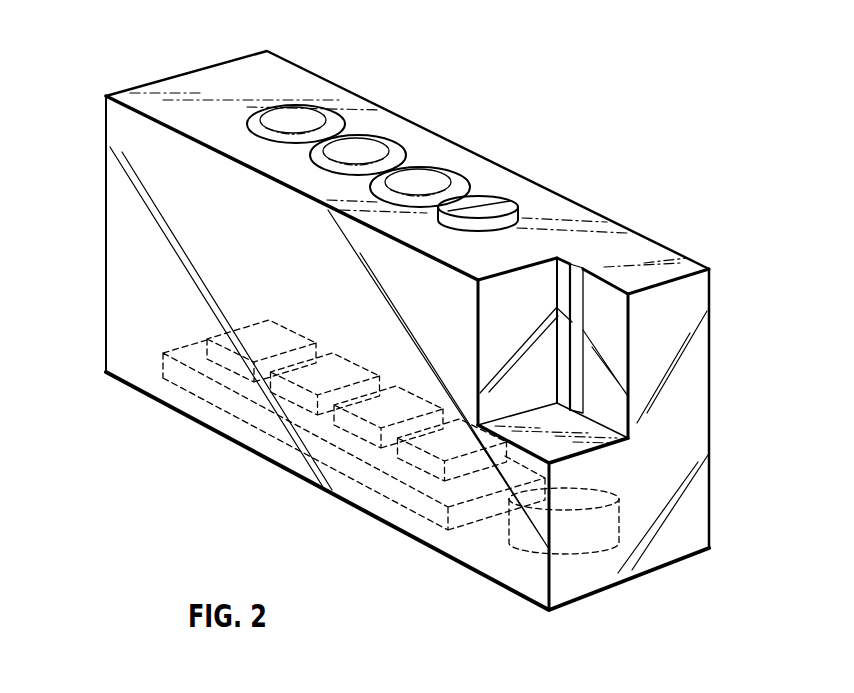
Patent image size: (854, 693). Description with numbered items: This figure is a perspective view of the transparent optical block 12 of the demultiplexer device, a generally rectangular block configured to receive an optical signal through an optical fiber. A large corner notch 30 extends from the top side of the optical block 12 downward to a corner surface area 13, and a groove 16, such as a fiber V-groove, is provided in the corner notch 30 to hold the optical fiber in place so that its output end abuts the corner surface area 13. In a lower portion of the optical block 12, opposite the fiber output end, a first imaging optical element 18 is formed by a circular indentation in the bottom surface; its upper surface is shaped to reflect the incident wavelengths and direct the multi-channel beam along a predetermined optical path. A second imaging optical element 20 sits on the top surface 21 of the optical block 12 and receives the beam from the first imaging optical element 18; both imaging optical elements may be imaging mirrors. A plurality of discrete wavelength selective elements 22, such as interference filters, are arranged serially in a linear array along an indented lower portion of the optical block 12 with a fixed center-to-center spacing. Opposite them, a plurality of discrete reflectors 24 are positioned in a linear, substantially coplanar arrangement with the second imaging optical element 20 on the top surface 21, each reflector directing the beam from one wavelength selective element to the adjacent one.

The optical block 12 is at (157, 72).
The corner surface area 13 is at (628, 440).
The groove 16 is at (580, 302).
The first imaging optical element 18 is at (509, 545).
The second imaging optical element 20 is at (490, 202).
The top surface 21 is at (568, 236).
The wavelength selective elements 22 is at (303, 437).
The discrete reflectors 24 is at (428, 173).
The corner notch 30 is at (613, 351).